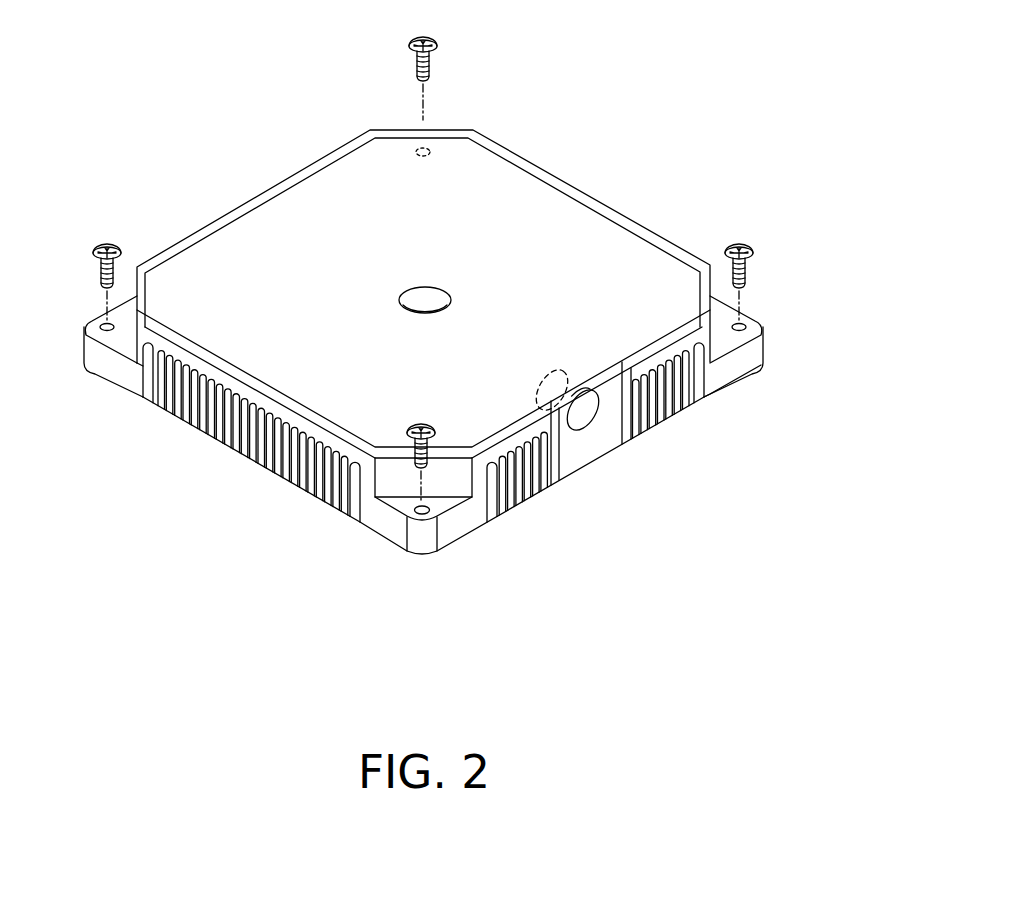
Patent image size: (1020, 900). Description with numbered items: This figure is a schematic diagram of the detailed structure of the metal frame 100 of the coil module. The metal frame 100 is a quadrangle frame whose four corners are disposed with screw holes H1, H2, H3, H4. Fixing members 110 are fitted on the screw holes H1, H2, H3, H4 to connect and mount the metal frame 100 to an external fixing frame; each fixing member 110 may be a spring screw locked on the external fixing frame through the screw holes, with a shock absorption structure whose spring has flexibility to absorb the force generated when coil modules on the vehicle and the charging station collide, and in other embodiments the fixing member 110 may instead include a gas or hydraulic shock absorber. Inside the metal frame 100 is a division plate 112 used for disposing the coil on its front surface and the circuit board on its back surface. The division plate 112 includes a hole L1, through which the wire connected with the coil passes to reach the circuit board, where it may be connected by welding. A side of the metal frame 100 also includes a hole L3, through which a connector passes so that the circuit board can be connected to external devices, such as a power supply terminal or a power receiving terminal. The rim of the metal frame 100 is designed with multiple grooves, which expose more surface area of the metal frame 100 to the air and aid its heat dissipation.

The metal frame 100 is at (463, 309).
The fixing member 110 is at (747, 250).
The division plate 112 is at (277, 237).
The hole L1 is at (413, 288).
The hole L3 is at (577, 415).
The screw hole H1 is at (740, 333).
The screw hole H2 is at (415, 510).
The screw hole H3 is at (107, 333).
The screw hole H4 is at (431, 152).